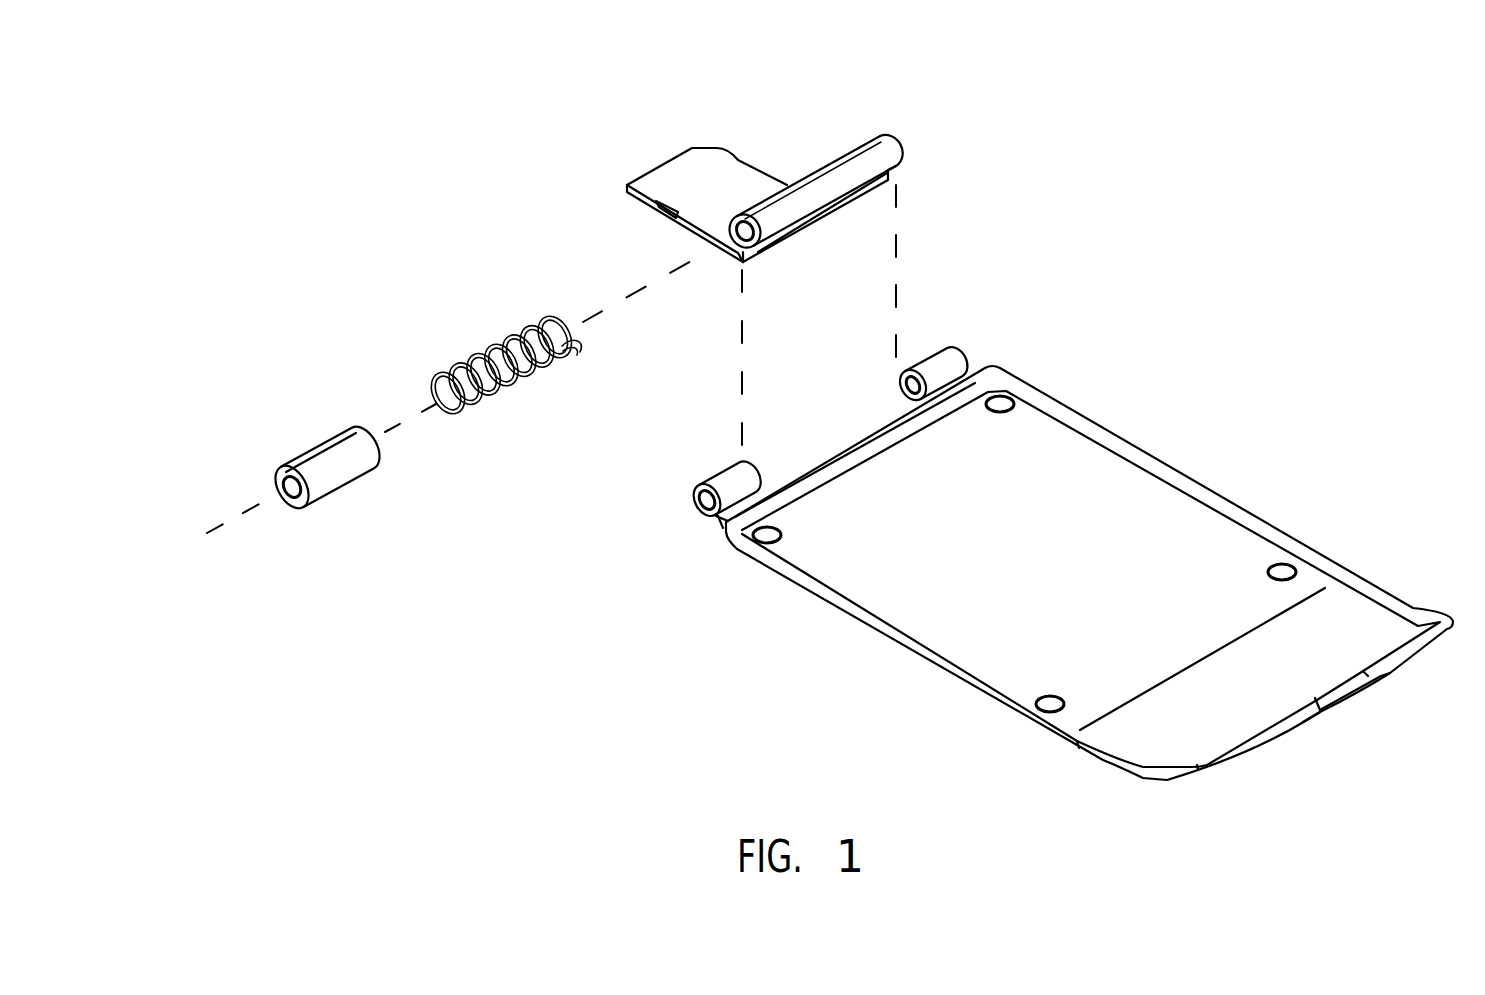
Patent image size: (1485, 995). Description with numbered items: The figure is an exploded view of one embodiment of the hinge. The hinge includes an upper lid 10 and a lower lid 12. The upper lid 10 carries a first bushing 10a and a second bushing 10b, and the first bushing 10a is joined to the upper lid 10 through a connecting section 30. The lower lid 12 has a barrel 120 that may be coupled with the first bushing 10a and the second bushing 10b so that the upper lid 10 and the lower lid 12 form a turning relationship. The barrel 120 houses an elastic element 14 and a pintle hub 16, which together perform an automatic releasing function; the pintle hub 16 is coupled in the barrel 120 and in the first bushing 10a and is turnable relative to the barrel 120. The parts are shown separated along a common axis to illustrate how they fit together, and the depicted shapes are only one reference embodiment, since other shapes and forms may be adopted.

The upper lid 10 is at (1122, 495).
The first bushing 10a is at (720, 487).
The second bushing 10b is at (943, 360).
The lower lid 12 is at (722, 167).
The barrel 120 is at (878, 162).
The elastic element 14 is at (505, 347).
The pintle hub 16 is at (342, 480).
The connecting section 30 is at (722, 517).